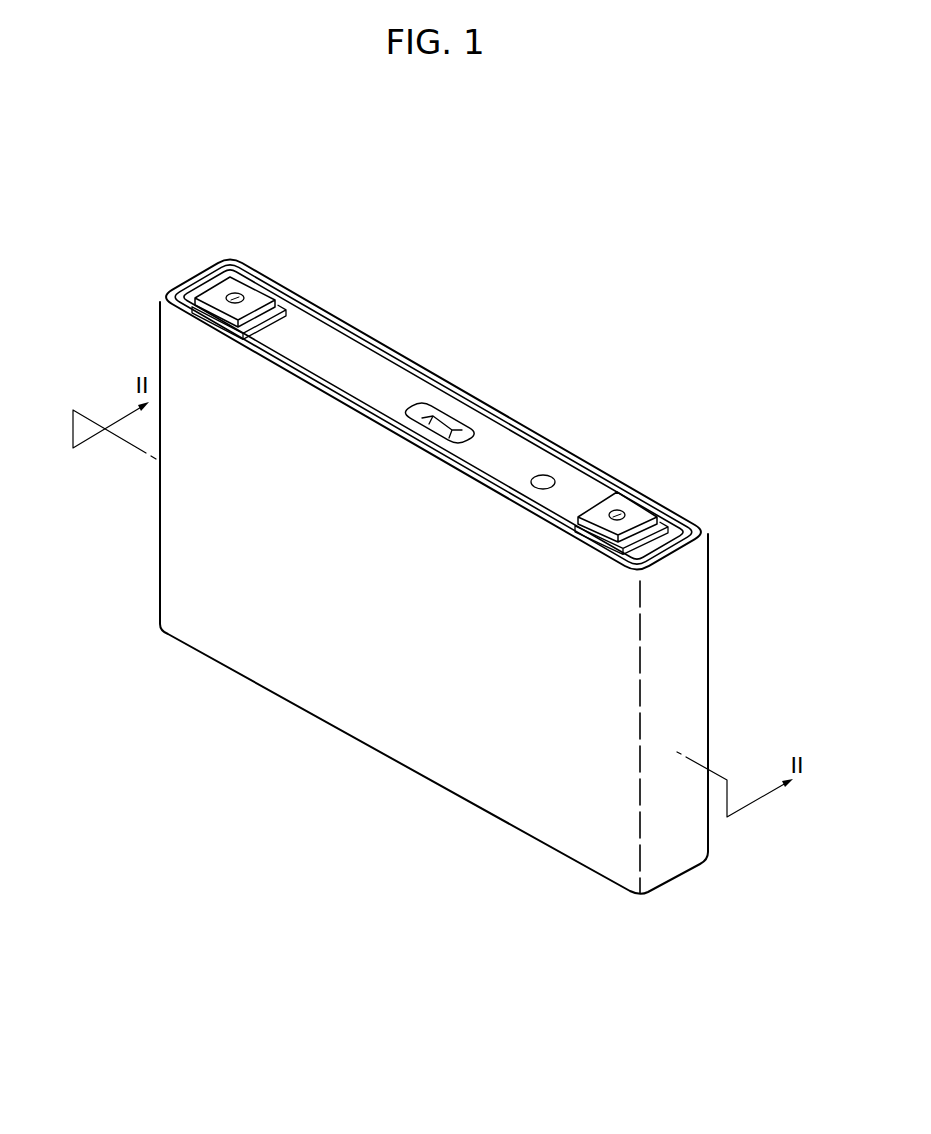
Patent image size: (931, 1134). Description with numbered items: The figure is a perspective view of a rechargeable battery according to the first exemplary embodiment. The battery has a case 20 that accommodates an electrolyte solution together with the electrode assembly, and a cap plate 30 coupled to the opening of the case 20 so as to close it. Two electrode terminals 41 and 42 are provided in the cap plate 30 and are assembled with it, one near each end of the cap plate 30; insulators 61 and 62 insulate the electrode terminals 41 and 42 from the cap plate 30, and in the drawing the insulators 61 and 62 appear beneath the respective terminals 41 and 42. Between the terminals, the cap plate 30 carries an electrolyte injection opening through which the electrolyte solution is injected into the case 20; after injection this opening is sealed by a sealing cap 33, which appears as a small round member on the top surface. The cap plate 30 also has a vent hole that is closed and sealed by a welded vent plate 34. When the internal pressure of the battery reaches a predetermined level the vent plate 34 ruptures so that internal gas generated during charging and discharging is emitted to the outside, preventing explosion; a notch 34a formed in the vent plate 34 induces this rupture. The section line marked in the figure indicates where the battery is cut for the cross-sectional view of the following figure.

The case 20 is at (352, 715).
The cap plate 30 is at (373, 363).
The sealing cap 33 is at (543, 478).
The vent plate 34 is at (435, 410).
The notch 34a is at (452, 422).
The electrode terminal 41 is at (239, 284).
The electrode terminal 42 is at (630, 500).
The insulator 61 is at (297, 315).
The insulator 62 is at (643, 530).